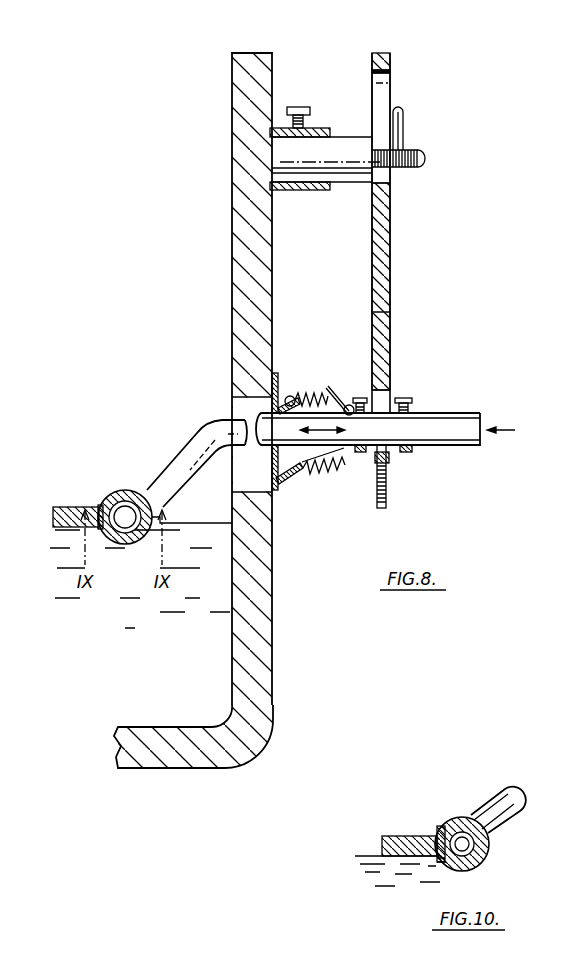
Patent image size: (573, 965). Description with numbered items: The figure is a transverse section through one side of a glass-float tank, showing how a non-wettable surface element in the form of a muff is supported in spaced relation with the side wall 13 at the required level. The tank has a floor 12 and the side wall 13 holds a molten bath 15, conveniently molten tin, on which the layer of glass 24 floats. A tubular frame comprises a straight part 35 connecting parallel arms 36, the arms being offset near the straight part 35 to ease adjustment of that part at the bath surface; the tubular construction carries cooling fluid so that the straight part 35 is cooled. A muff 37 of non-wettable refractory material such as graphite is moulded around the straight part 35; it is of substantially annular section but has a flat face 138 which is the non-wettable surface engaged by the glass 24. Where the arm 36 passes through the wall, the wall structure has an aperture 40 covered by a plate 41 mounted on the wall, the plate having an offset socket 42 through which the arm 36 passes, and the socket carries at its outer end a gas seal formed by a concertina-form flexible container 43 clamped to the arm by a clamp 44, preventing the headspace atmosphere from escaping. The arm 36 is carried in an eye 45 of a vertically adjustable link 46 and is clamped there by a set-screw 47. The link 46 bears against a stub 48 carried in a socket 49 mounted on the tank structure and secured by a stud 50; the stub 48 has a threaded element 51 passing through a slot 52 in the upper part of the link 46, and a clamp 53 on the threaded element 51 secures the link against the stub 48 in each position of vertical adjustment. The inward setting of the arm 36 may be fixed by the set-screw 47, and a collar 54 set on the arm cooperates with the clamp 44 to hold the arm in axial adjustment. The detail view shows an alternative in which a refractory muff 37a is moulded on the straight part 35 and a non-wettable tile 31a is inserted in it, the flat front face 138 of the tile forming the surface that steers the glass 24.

In FIG. 8, the floor 12 is at (182, 758).
In FIG. 8, the side wall 13 is at (265, 612).
In FIG. 8, the molten bath 15 is at (124, 664).
In FIG. 10, the molten bath 15 is at (382, 875).
In FIG. 8, the glass 24 is at (71, 508).
In FIG. 10, the glass 24 is at (398, 835).
In FIG. 10, the non-wettable tile 31a is at (440, 836).
In FIG. 8, the straight part 35 is at (150, 503).
In FIG. 10, the straight part 35 is at (478, 846).
In FIG. 8, the arm 36 is at (189, 436).
In FIG. 10, the arm 36 is at (516, 806).
In FIG. 8, the muff 37 is at (123, 489).
In FIG. 10, the refractory muff 37a is at (458, 818).
In FIG. 8, the aperture 40 is at (243, 403).
In FIG. 8, the plate 41 is at (276, 378).
In FIG. 8, the offset socket 42 is at (286, 473).
In FIG. 8, the flexible container 43 is at (309, 388).
In FIG. 8, the clamp 44 is at (358, 398).
In FIG. 8, the eye 45 is at (390, 458).
In FIG. 8, the vertically adjustable link 46 is at (391, 62).
In FIG. 8, the set-screw 47 is at (388, 494).
In FIG. 8, the stub 48 is at (352, 165).
In FIG. 8, the socket 49 is at (325, 127).
In FIG. 8, the stud 50 is at (298, 106).
In FIG. 8, the threaded element 51 is at (425, 162).
In FIG. 8, the slot 52 is at (381, 94).
In FIG. 8, the clamp 53 is at (405, 121).
In FIG. 8, the collar 54 is at (404, 398).
In FIG. 8, the flat face 138 is at (101, 505).
In FIG. 10, the flat face 138 is at (434, 861).